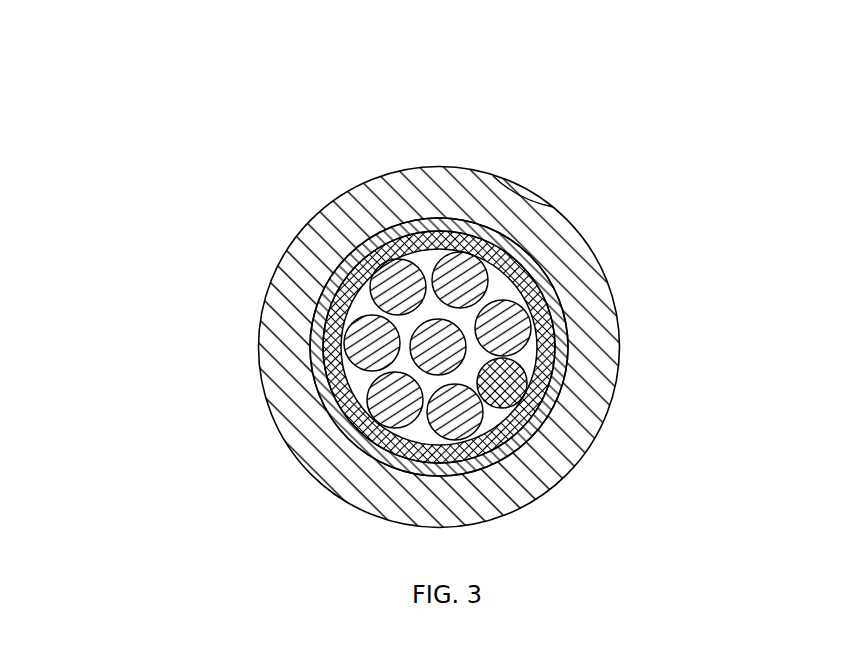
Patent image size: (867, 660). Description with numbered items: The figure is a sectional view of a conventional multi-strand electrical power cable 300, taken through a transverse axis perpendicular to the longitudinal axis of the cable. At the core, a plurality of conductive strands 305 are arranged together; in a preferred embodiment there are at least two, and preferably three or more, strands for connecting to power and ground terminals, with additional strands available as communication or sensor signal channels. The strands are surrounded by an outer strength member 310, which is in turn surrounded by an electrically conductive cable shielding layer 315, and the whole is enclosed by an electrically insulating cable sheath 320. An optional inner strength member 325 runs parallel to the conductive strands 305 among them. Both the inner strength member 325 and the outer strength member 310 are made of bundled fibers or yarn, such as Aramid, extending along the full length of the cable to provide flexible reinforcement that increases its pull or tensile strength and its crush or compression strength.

The multi-strand electrical power cable 300 is at (141, 105).
The conductive strands 305 is at (338, 408).
The outer strength member 310 is at (467, 232).
The cable shielding layer 315 is at (336, 284).
The cable sheath 320 is at (399, 178).
The inner strength member 325 is at (527, 369).